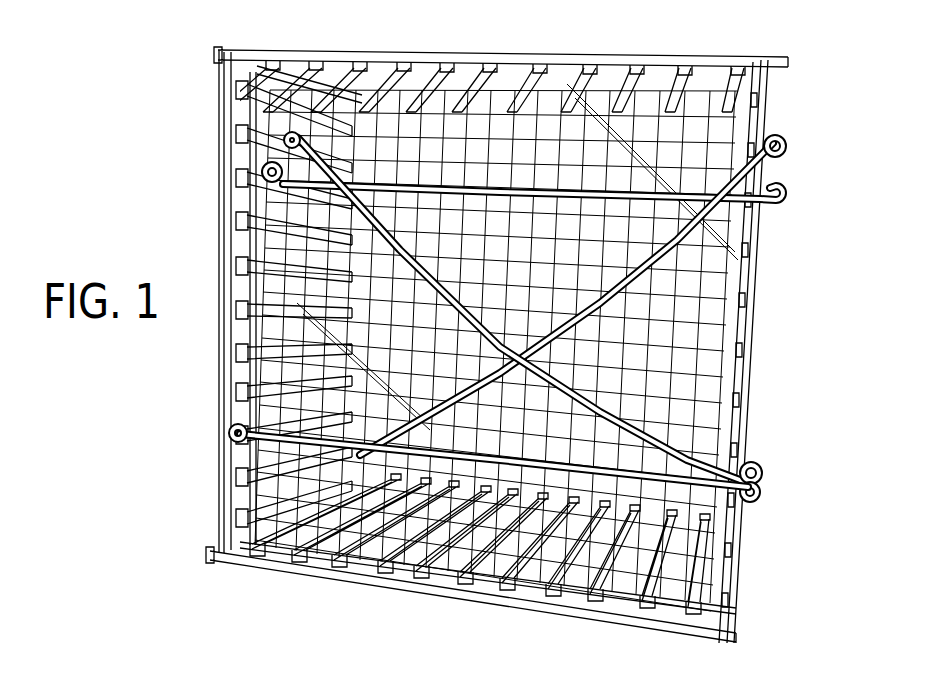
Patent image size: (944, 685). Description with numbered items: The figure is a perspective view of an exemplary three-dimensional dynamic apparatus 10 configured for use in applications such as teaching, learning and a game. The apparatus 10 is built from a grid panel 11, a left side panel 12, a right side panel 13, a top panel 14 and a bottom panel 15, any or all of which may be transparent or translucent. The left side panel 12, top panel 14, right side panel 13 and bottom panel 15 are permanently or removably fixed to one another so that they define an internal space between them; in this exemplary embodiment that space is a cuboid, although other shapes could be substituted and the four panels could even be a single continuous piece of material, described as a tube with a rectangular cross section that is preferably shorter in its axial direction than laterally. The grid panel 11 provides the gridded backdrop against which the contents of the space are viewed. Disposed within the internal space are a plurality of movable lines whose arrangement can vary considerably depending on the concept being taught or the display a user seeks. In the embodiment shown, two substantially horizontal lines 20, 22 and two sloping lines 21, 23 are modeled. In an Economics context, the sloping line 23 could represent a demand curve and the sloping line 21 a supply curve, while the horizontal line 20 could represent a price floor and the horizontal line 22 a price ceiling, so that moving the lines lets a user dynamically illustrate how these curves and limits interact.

The three-dimensional dynamic apparatus 10 is at (158, 108).
The grid panel 11 is at (546, 265).
The left side panel 12 is at (209, 504).
The right side panel 13 is at (780, 122).
The top panel 14 is at (480, 44).
The bottom panel 15 is at (620, 628).
The horizontal line 20 is at (230, 427).
The sloping line 21 is at (792, 147).
The horizontal line 22 is at (795, 203).
The sloping line 23 is at (770, 470).